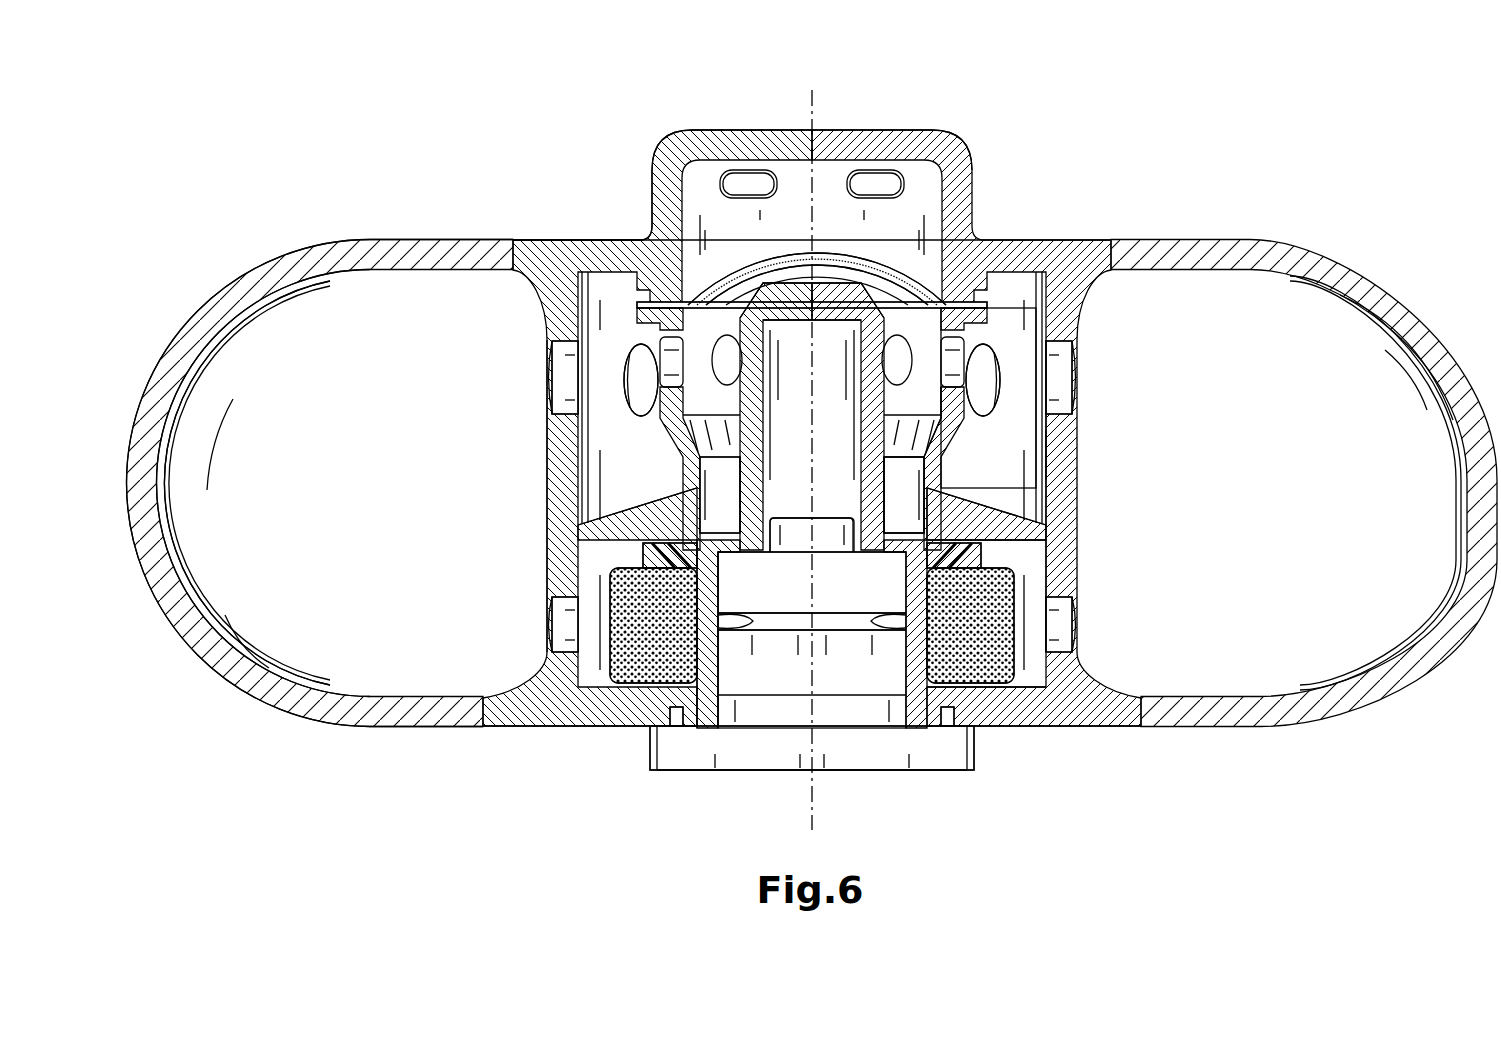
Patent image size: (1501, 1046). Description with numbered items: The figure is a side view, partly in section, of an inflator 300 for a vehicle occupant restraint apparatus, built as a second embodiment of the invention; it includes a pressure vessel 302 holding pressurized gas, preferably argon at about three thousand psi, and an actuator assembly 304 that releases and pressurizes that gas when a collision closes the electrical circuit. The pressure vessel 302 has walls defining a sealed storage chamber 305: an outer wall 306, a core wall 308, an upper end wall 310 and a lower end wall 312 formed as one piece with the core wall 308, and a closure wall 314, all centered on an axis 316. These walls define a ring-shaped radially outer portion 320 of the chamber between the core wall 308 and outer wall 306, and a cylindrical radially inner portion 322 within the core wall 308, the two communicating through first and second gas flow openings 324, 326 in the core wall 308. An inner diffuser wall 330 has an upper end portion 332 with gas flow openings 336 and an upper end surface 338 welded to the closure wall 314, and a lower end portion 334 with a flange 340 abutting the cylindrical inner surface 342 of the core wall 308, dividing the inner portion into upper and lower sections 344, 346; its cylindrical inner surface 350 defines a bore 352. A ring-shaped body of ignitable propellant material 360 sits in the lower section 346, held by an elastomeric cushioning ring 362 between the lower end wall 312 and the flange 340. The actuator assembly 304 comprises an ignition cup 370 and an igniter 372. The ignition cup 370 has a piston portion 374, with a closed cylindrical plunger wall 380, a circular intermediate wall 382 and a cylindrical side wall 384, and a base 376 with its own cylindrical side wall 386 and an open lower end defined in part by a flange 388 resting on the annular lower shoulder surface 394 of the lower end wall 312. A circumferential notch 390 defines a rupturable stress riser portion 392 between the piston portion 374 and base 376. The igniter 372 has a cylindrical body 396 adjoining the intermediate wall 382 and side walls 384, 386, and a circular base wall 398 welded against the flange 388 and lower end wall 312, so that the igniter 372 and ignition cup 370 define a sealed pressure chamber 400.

The inflator 300 is at (538, 148).
The pressure vessel 302 is at (320, 238).
The actuator assembly 304 is at (720, 477).
The storage chamber 305 is at (283, 353).
The outer wall 306 is at (179, 357).
The core wall 308 is at (573, 437).
The upper end wall 310 is at (647, 237).
The lower end wall 312 is at (620, 725).
The closure wall 314 is at (835, 262).
The axis 316 is at (812, 118).
The radially outer portion of the storage chamber 320 is at (288, 475).
The radially inner portion of the storage chamber 322 is at (971, 450).
The first gas flow opening 324 is at (560, 371).
The second gas flow opening 326 is at (555, 620).
The inner diffuser wall 330 is at (682, 492).
The upper end portion of the inner diffuser wall 332 is at (960, 400).
The lower end portion of the inner diffuser wall 334 is at (940, 483).
The gas flow openings 336 is at (962, 367).
The upper end surface 338 is at (950, 303).
The flange 340 is at (1040, 518).
The cylindrical inner surface of the core wall 342 is at (1045, 460).
The upper section 344 is at (1017, 490).
The lower section 346 is at (1030, 549).
The cylindrical inner surface of the inner diffuser wall 350 is at (900, 505).
The bore 352 is at (905, 458).
The ignitable propellant material 360 is at (640, 598).
The elastomeric cushioning ring 362 is at (655, 550).
The ignition cup 370 is at (882, 295).
The igniter 372 is at (758, 772).
The piston portion 374 is at (858, 390).
The base 376 is at (985, 697).
The cylindrical plunger wall 380 is at (750, 433).
The intermediate wall 382 is at (728, 548).
The cylindrical side wall 384 is at (705, 598).
The cylindrical side wall 386 is at (712, 673).
The flange 388 is at (683, 728).
The circumferential notch 390 is at (865, 647).
The rupturable stress riser portion 392 is at (847, 633).
The annular lower shoulder surface 394 is at (940, 722).
The cylindrical body 396 is at (824, 593).
The circular base wall 398 is at (840, 757).
The sealed pressure chamber 400 is at (814, 417).